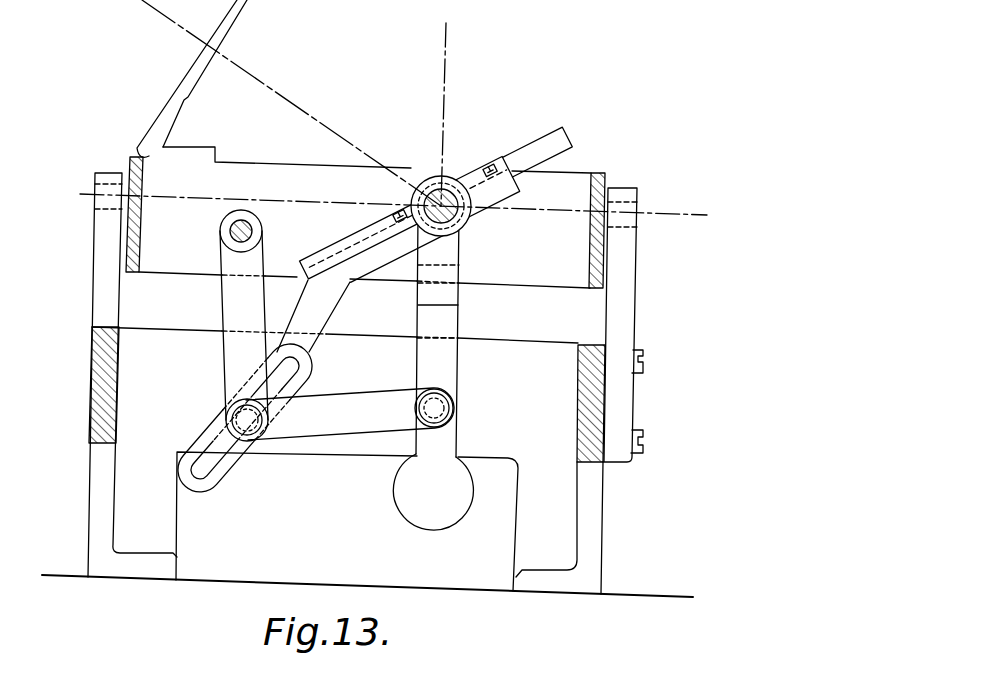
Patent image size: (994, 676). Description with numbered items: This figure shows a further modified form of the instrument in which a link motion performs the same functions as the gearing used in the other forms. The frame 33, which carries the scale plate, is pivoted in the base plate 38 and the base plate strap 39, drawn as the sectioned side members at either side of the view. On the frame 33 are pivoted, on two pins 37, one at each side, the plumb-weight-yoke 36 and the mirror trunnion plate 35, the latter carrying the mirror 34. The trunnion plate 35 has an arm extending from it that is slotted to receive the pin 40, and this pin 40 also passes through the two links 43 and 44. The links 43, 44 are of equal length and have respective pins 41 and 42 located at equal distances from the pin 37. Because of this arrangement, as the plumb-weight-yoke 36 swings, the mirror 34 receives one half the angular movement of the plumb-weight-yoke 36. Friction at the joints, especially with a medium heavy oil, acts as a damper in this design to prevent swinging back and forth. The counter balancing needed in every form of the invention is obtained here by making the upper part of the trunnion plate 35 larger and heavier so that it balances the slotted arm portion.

The frame 33 is at (300, 134).
The mirror 34 is at (607, 96).
The mirror trunnion plate 35 is at (507, 116).
The plumb-weight-yoke 36 is at (398, 512).
The pin 37 is at (453, 216).
The base plate 38 is at (94, 340).
The base plate strap 39 is at (638, 313).
The pin 40 is at (253, 426).
The pin 41 is at (229, 232).
The pin 42 is at (441, 406).
The link 43 is at (221, 310).
The link 44 is at (371, 443).